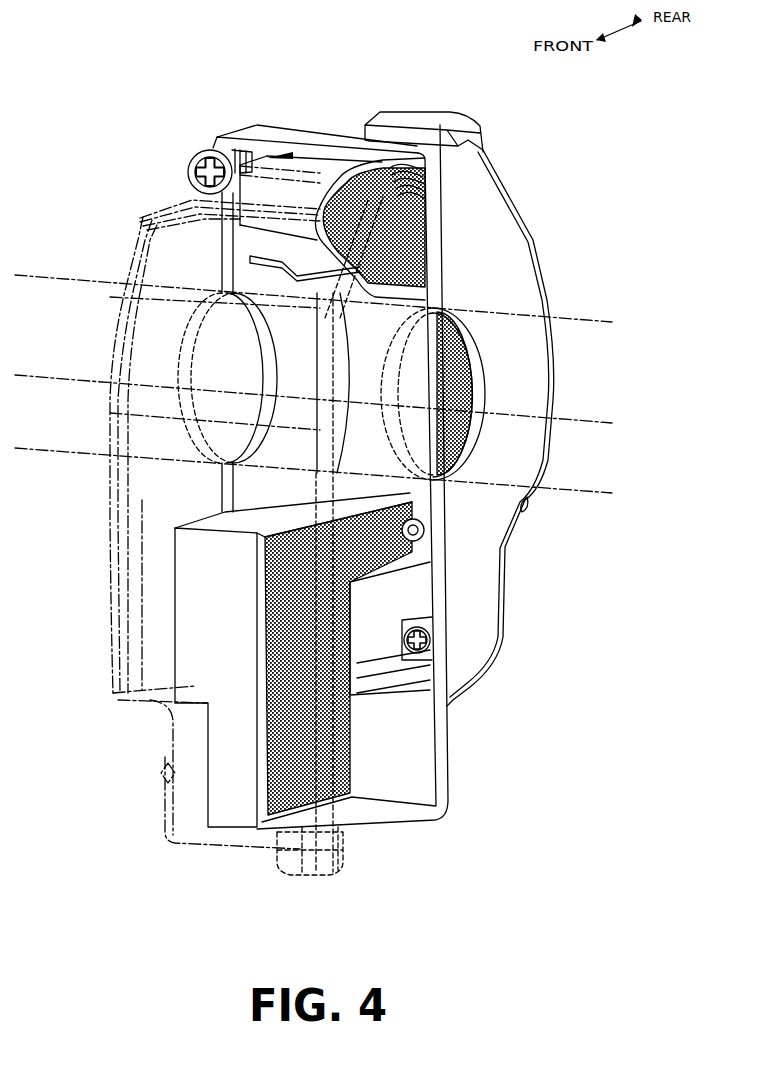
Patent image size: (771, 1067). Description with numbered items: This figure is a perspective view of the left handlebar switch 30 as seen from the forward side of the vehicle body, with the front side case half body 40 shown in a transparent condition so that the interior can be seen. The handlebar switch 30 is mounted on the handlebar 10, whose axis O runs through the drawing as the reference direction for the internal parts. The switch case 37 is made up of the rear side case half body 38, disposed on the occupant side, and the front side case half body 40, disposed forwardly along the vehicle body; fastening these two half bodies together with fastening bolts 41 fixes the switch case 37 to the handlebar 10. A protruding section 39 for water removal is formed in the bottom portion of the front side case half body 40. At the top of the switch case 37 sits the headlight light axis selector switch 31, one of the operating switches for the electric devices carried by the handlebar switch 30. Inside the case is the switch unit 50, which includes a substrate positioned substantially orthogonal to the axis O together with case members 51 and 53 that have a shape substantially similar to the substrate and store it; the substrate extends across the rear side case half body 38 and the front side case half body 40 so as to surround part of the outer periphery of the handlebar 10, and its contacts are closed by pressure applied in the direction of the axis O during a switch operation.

The handlebar 10 is at (588, 320).
The axis O is at (588, 418).
The left handlebar switch 30 is at (212, 58).
The headlight light axis selector switch 31 is at (440, 118).
The switch case 37 is at (281, 126).
The rear side case half body 38 is at (482, 185).
The protruding section 39 is at (323, 877).
The front side case half body 40 is at (132, 233).
The fastening bolt 41 is at (195, 157).
The switch unit 50 is at (215, 786).
The case member 51 is at (178, 686).
The case member 53 is at (388, 180).